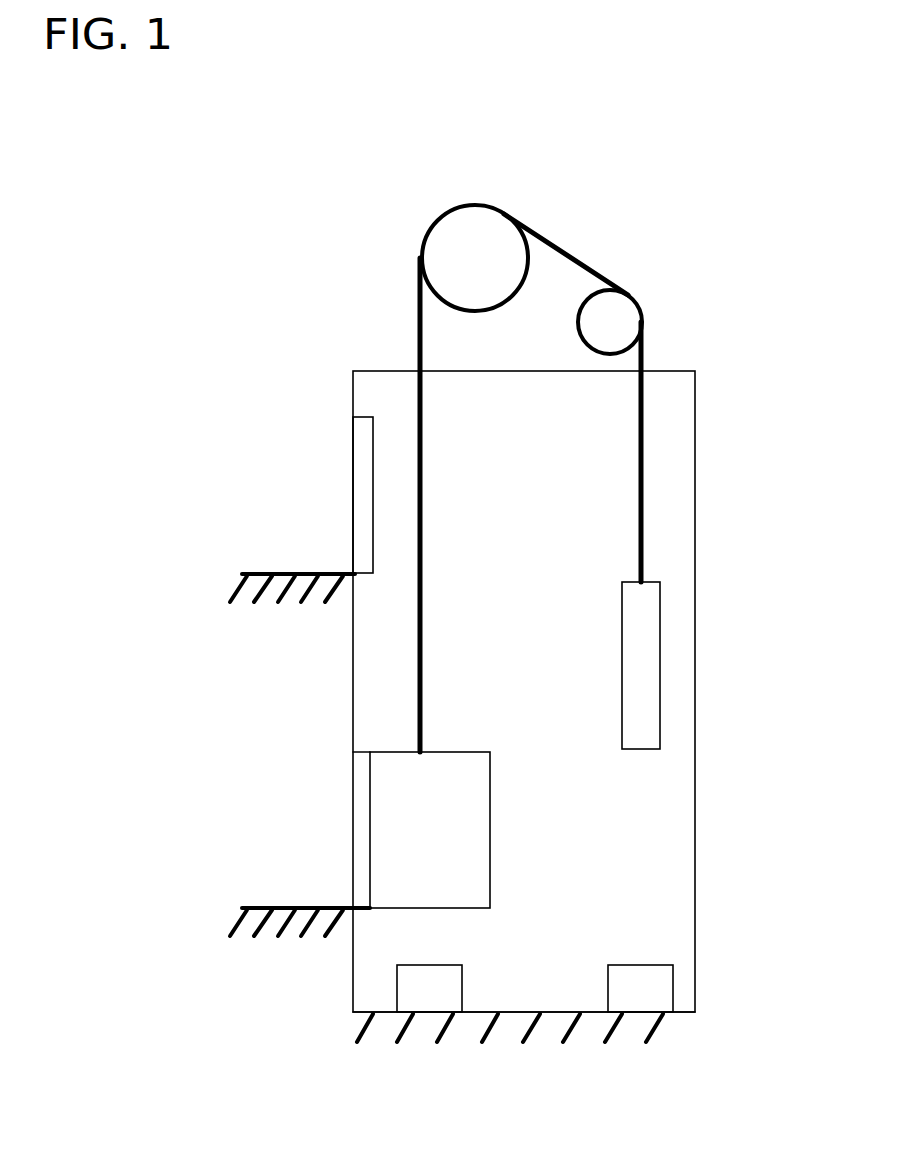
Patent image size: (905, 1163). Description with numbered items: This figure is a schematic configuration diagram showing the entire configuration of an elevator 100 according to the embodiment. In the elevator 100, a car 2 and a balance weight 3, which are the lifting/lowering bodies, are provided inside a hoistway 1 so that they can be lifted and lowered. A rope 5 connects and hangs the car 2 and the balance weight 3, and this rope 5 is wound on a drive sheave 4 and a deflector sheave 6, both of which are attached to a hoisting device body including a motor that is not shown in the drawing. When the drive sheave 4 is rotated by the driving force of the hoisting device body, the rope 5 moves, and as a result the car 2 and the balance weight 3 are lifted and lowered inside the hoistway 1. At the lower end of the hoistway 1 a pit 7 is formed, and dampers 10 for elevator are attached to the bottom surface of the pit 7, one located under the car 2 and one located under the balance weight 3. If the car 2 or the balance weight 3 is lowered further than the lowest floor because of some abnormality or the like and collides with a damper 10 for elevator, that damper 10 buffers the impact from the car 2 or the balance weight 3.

The elevator 100 is at (538, 176).
The hoistway 1 is at (378, 652).
The car 2 is at (462, 825).
The balance weight 3 is at (640, 621).
The drive sheave 4 is at (447, 258).
The rope 5 is at (643, 434).
The deflector sheave 6 is at (615, 314).
The pit 7 is at (377, 993).
The damper for elevator 10 is at (430, 987).